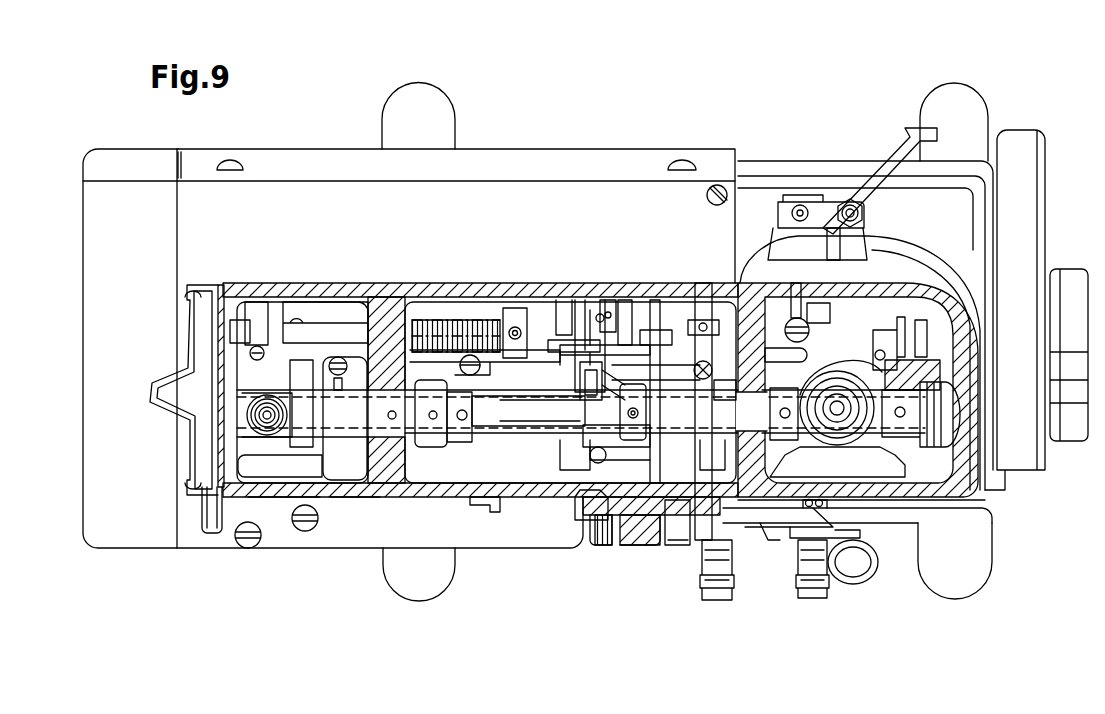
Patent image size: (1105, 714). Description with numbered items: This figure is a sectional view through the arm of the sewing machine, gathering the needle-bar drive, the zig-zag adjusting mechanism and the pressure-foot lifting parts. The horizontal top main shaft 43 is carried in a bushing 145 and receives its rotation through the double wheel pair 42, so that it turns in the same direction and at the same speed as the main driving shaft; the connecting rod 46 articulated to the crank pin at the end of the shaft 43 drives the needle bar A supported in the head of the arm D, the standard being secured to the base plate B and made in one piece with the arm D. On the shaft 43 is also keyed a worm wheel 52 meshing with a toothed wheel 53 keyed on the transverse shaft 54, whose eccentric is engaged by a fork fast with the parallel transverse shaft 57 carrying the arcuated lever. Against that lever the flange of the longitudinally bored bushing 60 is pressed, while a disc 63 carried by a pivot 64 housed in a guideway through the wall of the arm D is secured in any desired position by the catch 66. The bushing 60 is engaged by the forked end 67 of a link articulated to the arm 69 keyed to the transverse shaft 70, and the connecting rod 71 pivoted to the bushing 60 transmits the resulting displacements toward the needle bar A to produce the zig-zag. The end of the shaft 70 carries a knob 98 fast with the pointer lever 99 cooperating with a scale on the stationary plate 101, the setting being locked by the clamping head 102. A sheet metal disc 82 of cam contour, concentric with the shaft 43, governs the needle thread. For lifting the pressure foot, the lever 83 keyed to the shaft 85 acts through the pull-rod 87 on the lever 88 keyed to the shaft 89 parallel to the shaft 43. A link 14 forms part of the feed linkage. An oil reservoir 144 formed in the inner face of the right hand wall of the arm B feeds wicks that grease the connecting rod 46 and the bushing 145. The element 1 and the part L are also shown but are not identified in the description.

The knob 1 is at (1063, 287).
The link 14 is at (262, 290).
The double wheel pair 42 is at (845, 390).
The horizontal shaft 43 is at (866, 413).
The connecting rod 46 is at (310, 380).
The worm wheel 52 is at (588, 435).
The toothed wheel 53 is at (724, 390).
The transverse shaft 54 is at (840, 478).
The transverse shaft 57 is at (574, 511).
The bushing 60 is at (584, 412).
The disc 63 is at (562, 330).
The pivot 64 is at (588, 330).
The catch 66 is at (606, 300).
The forked end 67 is at (568, 342).
The arm 69 is at (642, 312).
The transverse shaft 70 is at (702, 303).
The connecting rod 71 is at (510, 416).
The sheet metal disc 82 is at (223, 366).
The lever 83 is at (888, 155).
The shaft 85 is at (797, 315).
The pull-rod 87 is at (834, 300).
The lever 88 is at (843, 307).
The shaft 89 is at (347, 333).
The knob 98 is at (687, 538).
The lever 99 is at (672, 528).
The stationary plate 101 is at (602, 545).
The clamping head 102 is at (640, 545).
The reservoir 144 is at (621, 305).
The bushing 145 is at (436, 443).
The needle bar A is at (258, 420).
The base plate B is at (774, 162).
The arm D is at (356, 498).
The top plate L is at (583, 190).